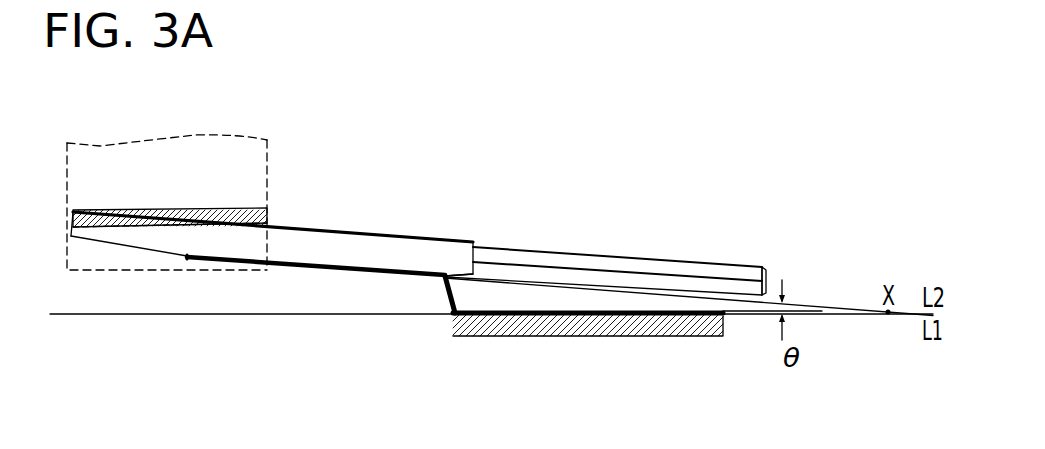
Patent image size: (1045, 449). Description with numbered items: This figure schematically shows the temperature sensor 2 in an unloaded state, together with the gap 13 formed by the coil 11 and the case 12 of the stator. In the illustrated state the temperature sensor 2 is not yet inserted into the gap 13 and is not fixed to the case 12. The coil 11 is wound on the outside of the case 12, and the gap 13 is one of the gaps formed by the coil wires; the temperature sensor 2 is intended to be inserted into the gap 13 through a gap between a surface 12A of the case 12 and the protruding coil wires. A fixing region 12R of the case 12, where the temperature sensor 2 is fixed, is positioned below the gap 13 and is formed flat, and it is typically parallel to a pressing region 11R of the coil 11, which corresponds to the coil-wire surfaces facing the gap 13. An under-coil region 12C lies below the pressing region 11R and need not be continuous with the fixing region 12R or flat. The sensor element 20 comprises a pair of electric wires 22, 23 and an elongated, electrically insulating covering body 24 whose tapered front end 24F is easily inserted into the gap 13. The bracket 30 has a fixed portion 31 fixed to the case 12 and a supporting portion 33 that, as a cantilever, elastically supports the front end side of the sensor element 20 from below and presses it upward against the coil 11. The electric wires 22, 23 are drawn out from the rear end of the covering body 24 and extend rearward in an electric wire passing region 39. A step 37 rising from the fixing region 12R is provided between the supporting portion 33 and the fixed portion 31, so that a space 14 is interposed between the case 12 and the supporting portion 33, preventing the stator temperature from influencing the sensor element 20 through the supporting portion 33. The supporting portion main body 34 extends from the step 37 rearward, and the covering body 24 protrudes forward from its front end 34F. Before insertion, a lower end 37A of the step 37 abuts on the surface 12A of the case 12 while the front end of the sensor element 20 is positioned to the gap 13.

The temperature sensor 2 is at (536, 128).
The coil 11 is at (192, 125).
The pressing region 11R is at (233, 207).
The case 12 is at (423, 158).
The surface 12A is at (388, 314).
The under-coil region 12C is at (147, 314).
The fixing region 12R is at (650, 314).
The gap 13 is at (120, 270).
The space 14 is at (343, 304).
The sensor element 20 is at (285, 214).
The electric wire 22 is at (733, 264).
The electric wire 23 is at (756, 268).
The covering body 24 is at (126, 208).
The front end 24F is at (72, 222).
The bracket 30 is at (679, 330).
The fixed portion 31 is at (550, 311).
The supporting portion 33 is at (330, 231).
The supporting portion main body 34 is at (293, 263).
The front end 34F is at (190, 258).
The step 37 is at (445, 292).
The lower end 37A is at (451, 312).
The electric wire passing region 39 is at (463, 317).